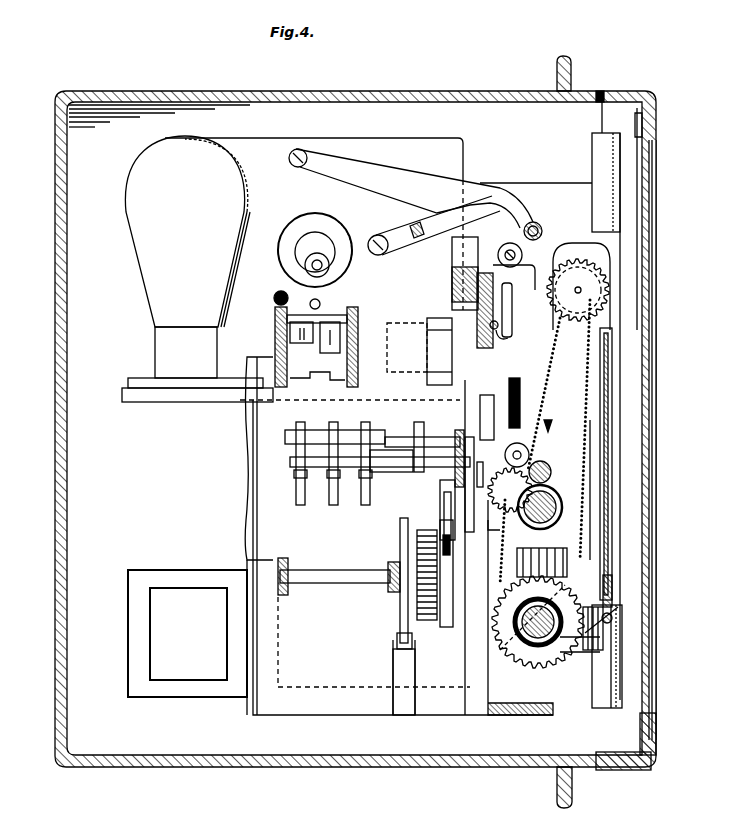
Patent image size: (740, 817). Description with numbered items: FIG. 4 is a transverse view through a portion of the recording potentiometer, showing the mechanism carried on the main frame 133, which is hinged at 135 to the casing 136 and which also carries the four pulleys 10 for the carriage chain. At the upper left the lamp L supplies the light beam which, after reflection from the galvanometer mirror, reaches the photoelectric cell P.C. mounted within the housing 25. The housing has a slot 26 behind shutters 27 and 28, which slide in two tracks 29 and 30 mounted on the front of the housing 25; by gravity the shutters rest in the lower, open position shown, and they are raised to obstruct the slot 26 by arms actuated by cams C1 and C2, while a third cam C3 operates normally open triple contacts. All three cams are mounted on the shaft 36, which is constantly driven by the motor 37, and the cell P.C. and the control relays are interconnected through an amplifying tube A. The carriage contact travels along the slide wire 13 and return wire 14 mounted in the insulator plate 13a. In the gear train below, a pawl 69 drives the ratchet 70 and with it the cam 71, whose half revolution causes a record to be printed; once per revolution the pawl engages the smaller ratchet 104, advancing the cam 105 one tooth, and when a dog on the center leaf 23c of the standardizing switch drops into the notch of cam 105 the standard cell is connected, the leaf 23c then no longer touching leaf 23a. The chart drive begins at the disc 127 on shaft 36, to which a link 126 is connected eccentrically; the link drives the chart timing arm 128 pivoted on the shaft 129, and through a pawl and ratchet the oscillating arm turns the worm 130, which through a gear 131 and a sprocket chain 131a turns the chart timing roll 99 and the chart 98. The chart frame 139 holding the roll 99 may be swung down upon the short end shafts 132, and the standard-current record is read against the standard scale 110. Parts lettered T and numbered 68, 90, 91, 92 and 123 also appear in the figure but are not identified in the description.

The amplifying tube A is at (150, 257).
The lamp L is at (315, 239).
The transformer T is at (197, 586).
The photoelectric cell P.C. is at (415, 338).
The cam C1 is at (302, 473).
The cam C2 is at (335, 473).
The cam C3 is at (367, 473).
The pulleys 10 is at (512, 310).
The slide wire 13 is at (506, 284).
The insulator plate 13a is at (487, 346).
The return wire 14 is at (500, 333).
The leaf 23a is at (394, 662).
The center leaf 23c is at (397, 641).
The housing 25 is at (375, 294).
The slot 26 is at (283, 338).
The shutter 27 is at (322, 387).
The shutter 28 is at (322, 356).
The track 29 is at (280, 294).
The track 30 is at (348, 302).
The shaft 36 is at (382, 468).
The motor 37 is at (255, 422).
The shaft 68 is at (331, 571).
The pawl 69 is at (428, 436).
The ratchet 70 is at (447, 632).
The cam 71 is at (455, 622).
The pin 90 is at (538, 226).
The lever 91 is at (513, 205).
The lever 92 is at (384, 237).
The chart 98 is at (606, 335).
The chart timing roll 99 is at (585, 264).
The ratchet 104 is at (428, 624).
The cam 105 is at (399, 606).
The standard scale 110 is at (618, 596).
The bar 123 is at (508, 385).
The link 126 is at (481, 465).
The disc 127 is at (473, 443).
The chart timing arm 128 is at (503, 533).
The shaft 129 is at (506, 552).
The worm 130 is at (560, 550).
The gear 131 is at (570, 605).
The sprocket chain 131a is at (596, 385).
The short end shafts 132 is at (515, 632).
The main frame 133 is at (542, 190).
The hinge 135 is at (612, 198).
The casing 136 is at (497, 766).
The frame 139 is at (595, 477).